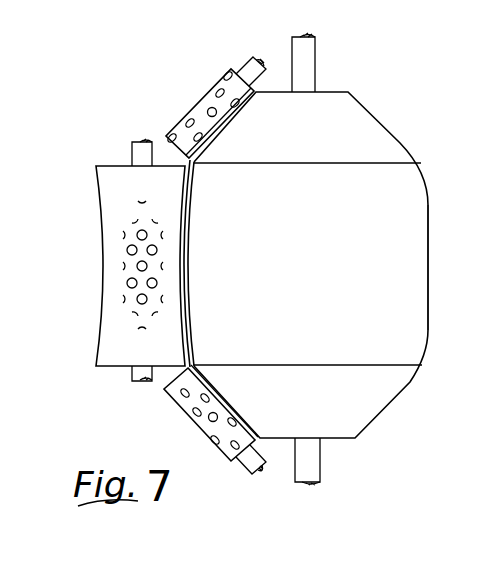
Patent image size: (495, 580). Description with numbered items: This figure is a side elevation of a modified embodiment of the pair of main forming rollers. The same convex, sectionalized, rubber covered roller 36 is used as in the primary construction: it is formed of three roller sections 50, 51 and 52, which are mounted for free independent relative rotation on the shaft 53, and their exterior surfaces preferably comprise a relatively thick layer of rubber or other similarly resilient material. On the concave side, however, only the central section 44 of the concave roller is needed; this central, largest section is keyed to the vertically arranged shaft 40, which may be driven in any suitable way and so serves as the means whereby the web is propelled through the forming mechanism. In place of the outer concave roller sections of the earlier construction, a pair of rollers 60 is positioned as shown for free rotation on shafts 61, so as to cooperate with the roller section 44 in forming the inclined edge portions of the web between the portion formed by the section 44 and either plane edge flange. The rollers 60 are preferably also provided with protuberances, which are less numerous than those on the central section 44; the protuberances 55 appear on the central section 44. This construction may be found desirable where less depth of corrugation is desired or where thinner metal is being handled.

The convex roller 36 is at (327, 265).
The shaft 40 is at (143, 152).
The central section 44 is at (107, 248).
The roller section 50 is at (365, 135).
The roller section 51 is at (392, 263).
The roller section 52 is at (375, 392).
The shaft 53 is at (310, 50).
The holes 55 is at (130, 283).
The rollers 60 is at (213, 102).
The shafts 61 is at (250, 66).